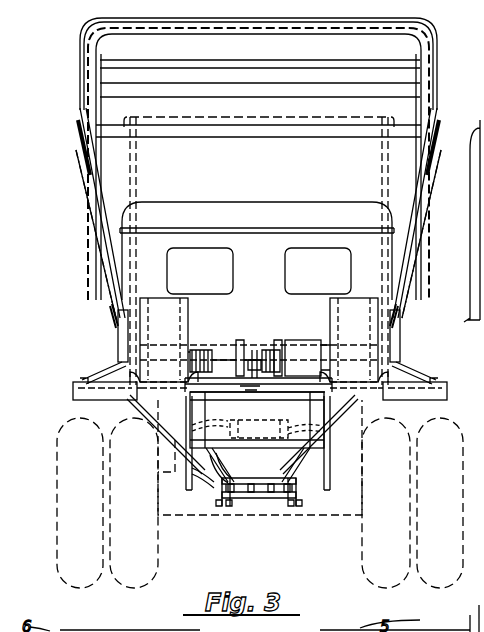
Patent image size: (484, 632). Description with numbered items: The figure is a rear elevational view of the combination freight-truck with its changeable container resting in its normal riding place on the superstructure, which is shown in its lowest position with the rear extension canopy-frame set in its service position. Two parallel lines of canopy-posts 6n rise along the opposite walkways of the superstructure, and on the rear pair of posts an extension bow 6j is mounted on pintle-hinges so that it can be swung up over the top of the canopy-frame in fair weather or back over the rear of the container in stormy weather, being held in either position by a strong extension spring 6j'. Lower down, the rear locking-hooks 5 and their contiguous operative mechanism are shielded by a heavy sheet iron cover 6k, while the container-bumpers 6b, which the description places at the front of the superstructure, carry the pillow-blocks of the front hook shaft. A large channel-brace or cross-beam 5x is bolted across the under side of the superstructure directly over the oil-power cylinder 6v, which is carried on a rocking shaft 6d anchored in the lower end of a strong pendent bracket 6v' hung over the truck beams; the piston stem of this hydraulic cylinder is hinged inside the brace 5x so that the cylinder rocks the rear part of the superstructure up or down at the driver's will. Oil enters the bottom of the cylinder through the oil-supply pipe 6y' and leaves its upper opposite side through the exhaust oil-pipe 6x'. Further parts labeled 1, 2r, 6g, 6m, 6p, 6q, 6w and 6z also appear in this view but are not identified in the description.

The cab body 1 is at (245, 206).
The drive block 2r is at (300, 336).
The rear locking-hooks 5 is at (238, 348).
The cross-beam 5x is at (155, 400).
The container-bumpers 6b is at (152, 305).
The rocking shaft 6d is at (298, 502).
The wheel 6g is at (118, 420).
The extension bow 6j is at (229, 159).
The extension spring 6j' is at (210, 333).
The sheet iron cover 6k is at (262, 376).
The base plate 6m is at (73, 388).
The canopy-posts 6n is at (100, 192).
The strut arm 6p is at (112, 298).
The brace 6q is at (98, 356).
The oil-power cylinder 6v is at (273, 479).
The pendent bracket 6v' is at (215, 500).
The housing 6w is at (318, 398).
The exhaust oil-pipe 6x' is at (293, 443).
The oil-supply pipe 6y' is at (191, 489).
The support post 6z is at (332, 480).